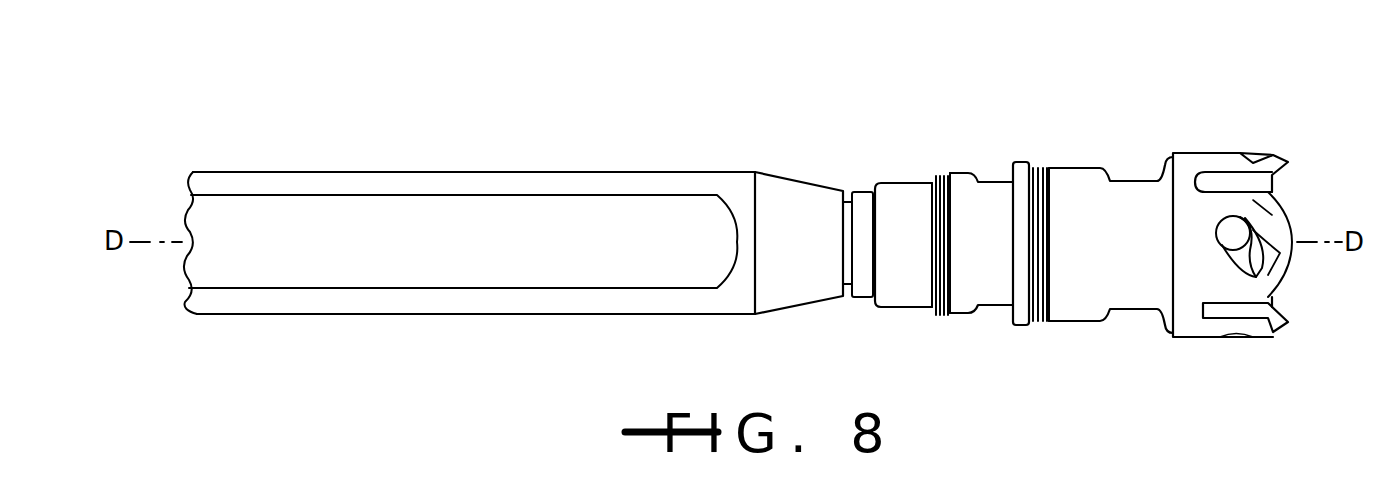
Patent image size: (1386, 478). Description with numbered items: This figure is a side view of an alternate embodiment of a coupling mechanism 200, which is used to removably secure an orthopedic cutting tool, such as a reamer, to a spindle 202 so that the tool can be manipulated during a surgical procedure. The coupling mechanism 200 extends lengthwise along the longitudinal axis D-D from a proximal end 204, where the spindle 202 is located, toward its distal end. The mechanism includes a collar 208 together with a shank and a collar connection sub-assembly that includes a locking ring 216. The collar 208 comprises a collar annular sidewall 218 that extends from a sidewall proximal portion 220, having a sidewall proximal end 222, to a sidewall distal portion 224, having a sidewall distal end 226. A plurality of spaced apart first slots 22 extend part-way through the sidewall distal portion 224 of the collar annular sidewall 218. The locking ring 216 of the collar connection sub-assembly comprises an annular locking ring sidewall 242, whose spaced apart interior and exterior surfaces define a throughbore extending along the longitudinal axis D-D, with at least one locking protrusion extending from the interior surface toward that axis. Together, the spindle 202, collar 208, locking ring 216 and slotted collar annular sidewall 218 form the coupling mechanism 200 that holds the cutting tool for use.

The coupling mechanism 200 is at (672, 132).
The spindle 202 is at (425, 233).
The proximal end 204 is at (865, 197).
The collar 208 is at (1118, 292).
The locking ring 216 is at (960, 290).
The collar annular sidewall 218 is at (1073, 188).
The sidewall proximal portion 220 is at (1080, 310).
The sidewall proximal end 222 is at (1012, 283).
The sidewall distal portion 224 is at (1195, 323).
The sidewall distal end 226 is at (1260, 207).
The annular locking ring sidewall 242 is at (1210, 170).
The first slots 22 is at (1258, 258).